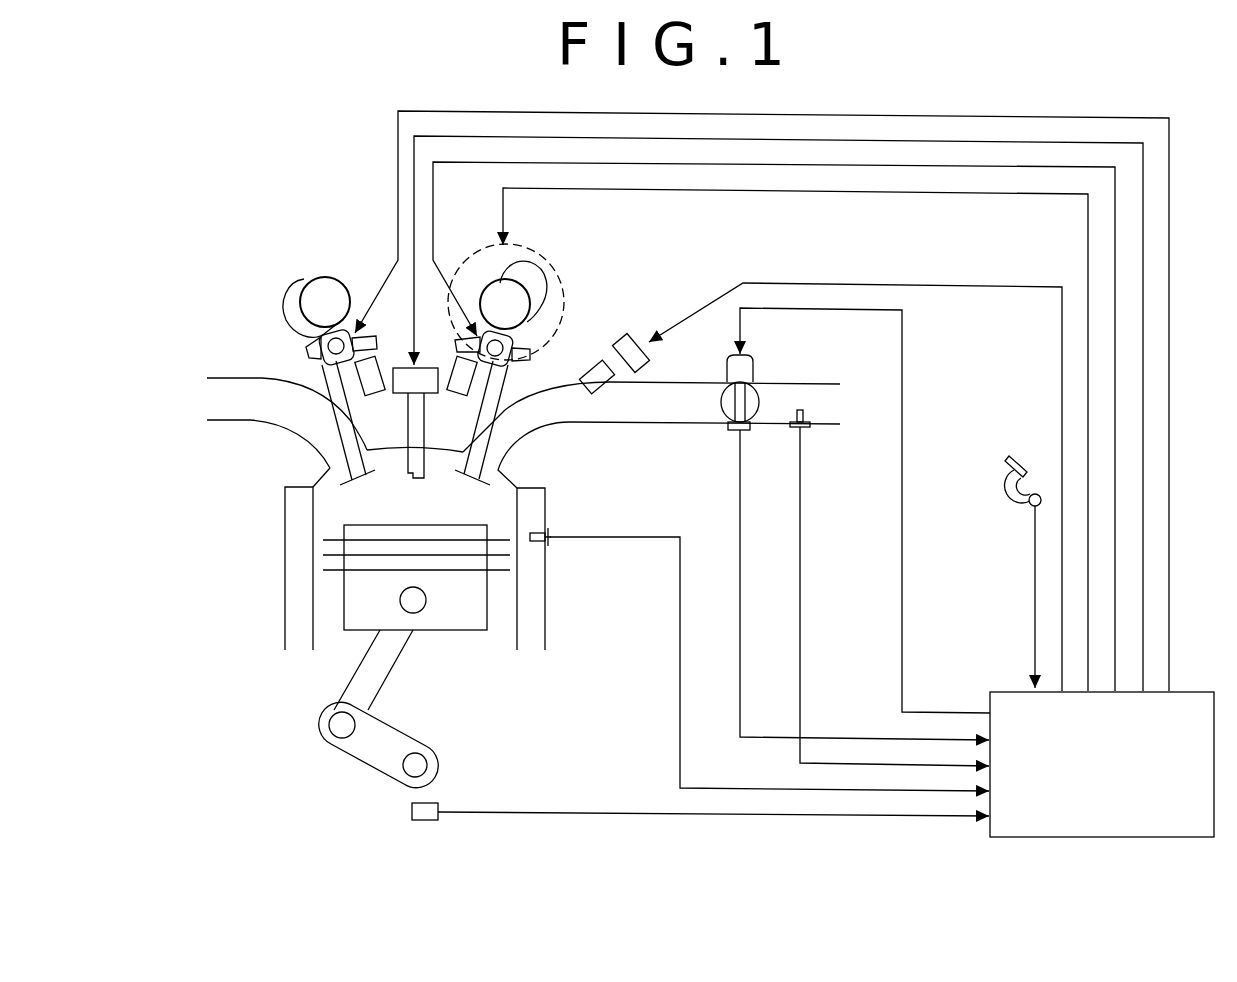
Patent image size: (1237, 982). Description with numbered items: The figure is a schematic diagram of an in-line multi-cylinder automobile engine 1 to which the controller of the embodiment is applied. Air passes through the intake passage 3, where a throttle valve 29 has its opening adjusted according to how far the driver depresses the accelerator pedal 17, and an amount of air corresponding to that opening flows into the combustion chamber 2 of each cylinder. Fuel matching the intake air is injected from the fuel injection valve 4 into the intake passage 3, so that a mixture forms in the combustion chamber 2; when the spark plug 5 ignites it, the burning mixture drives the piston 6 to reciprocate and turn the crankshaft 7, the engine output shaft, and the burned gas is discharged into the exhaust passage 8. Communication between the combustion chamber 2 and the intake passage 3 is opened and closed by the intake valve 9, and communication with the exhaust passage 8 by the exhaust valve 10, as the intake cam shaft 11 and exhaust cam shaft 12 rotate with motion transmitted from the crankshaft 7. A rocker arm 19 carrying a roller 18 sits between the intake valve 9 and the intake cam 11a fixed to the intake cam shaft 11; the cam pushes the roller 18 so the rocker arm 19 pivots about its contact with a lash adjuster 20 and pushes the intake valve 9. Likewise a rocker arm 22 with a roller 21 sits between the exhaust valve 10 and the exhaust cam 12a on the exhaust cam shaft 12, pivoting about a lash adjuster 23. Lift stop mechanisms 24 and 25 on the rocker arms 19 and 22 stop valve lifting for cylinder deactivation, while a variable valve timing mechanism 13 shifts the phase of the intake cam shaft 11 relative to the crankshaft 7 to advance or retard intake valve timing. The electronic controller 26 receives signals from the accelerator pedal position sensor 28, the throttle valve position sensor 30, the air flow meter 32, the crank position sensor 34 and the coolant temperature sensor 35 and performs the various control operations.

The engine 1 is at (347, 180).
The combustion chamber 2 is at (300, 490).
The intake passage 3 is at (622, 416).
The fuel injection valve 4 is at (648, 356).
The spark plug 5 is at (408, 434).
The piston 6 is at (460, 631).
The crankshaft 7 is at (430, 752).
The exhaust passage 8 is at (241, 414).
The intake valve 9 is at (467, 447).
The exhaust valve 10 is at (326, 457).
The intake cam shaft 11 is at (493, 312).
The intake cam 11a is at (534, 272).
The exhaust cam shaft 12 is at (312, 313).
The exhaust cam 12a is at (292, 278).
The variable valve timing mechanism 13 is at (565, 274).
The accelerator pedal 17 is at (1006, 462).
The roller 18 is at (541, 337).
The rocker arm 19 is at (534, 367).
The lash adjuster 20 is at (437, 367).
The roller 21 is at (330, 330).
The rocker arm 22 is at (304, 351).
The lash adjuster 23 is at (380, 362).
The lift stop mechanism 24 is at (476, 372).
The lift stop mechanism 25 is at (342, 417).
The electronic controller 26 is at (1011, 690).
The accelerator pedal position sensor 28 is at (1032, 483).
The throttle valve 29 is at (757, 398).
The throttle valve position sensor 30 is at (742, 430).
The air flow meter 32 is at (808, 430).
The crank position sensor 34 is at (415, 835).
The coolant temperature sensor 35 is at (553, 532).